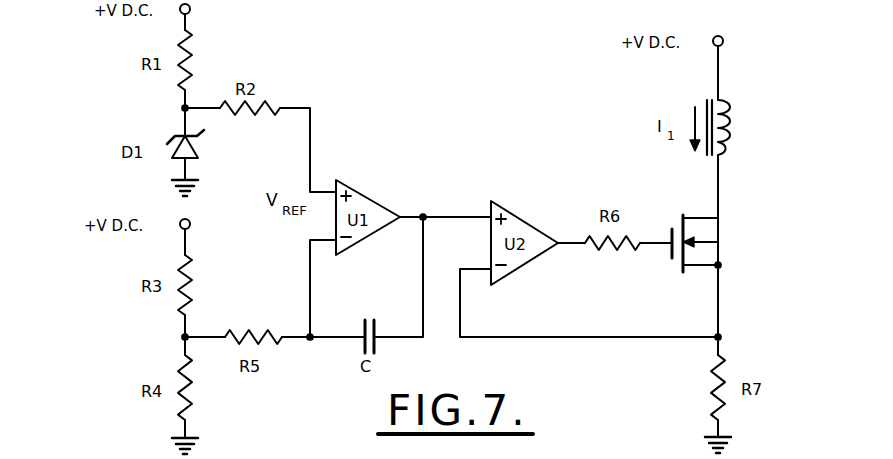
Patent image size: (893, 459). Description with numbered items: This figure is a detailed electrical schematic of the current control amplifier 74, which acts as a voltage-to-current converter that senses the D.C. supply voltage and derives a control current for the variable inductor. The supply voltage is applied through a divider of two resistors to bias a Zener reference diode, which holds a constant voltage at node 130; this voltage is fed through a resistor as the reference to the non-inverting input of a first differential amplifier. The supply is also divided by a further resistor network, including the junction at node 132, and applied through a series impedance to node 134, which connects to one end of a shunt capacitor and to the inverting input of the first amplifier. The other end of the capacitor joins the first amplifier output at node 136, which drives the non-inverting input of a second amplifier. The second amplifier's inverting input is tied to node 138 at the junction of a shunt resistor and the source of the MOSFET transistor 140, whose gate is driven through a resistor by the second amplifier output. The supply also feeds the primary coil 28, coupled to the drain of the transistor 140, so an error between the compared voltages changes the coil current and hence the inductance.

The primary coil 28 is at (731, 125).
The current control amplifier 74 is at (496, 86).
The node 130 is at (182, 108).
The voltage divider node 132 is at (182, 337).
The node 134 is at (310, 341).
The node 136 is at (424, 213).
The node 138 is at (722, 337).
The MOSFET transistor 140 is at (722, 247).